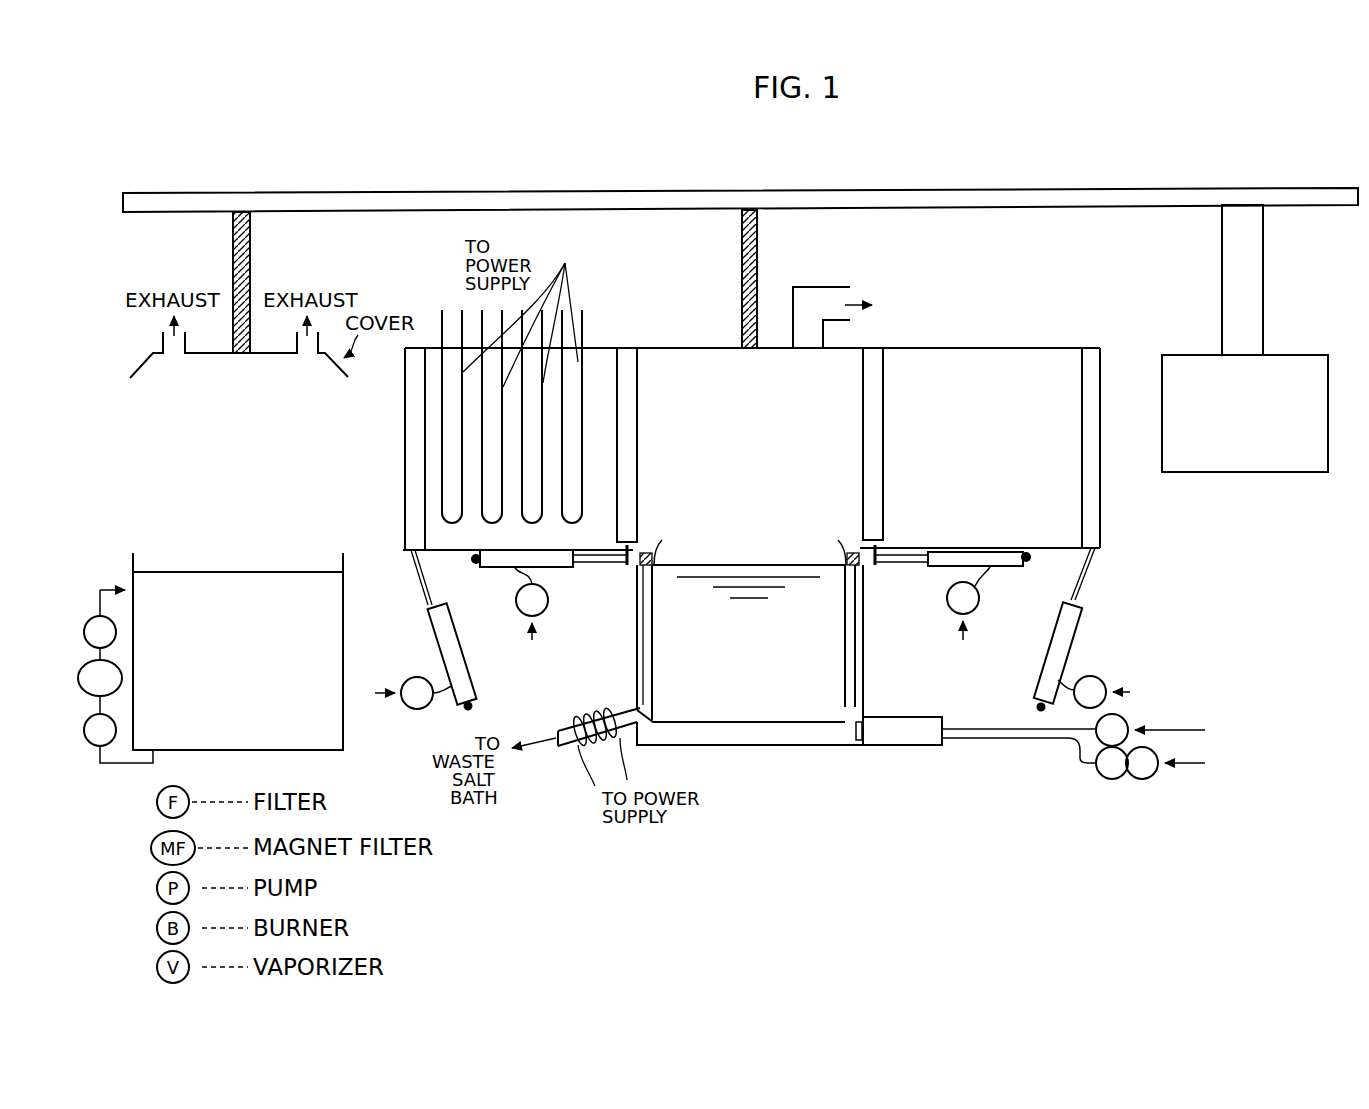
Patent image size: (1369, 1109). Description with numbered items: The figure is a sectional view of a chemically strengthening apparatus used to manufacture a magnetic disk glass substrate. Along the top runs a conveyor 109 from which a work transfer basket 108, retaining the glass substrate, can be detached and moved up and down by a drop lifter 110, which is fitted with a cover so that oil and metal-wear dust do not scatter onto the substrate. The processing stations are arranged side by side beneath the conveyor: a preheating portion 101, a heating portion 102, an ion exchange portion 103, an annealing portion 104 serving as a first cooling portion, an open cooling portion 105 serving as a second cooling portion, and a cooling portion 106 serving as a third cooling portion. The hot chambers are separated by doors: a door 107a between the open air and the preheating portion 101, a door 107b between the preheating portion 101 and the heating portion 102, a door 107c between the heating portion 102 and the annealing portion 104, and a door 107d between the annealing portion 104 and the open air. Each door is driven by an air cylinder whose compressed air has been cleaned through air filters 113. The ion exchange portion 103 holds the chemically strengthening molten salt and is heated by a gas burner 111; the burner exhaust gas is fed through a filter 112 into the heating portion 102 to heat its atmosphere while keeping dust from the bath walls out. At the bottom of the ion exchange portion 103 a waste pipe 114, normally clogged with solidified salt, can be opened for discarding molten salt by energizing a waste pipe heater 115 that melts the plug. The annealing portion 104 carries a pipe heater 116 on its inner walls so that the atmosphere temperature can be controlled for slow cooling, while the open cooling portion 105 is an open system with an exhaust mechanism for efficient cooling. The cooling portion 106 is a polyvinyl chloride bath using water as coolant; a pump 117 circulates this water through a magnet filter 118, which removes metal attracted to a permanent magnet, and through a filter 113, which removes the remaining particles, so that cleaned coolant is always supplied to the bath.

The preheating portion 101 is at (968, 367).
The heating portion 102 is at (687, 367).
The ion exchange portion 103 is at (790, 712).
The annealing portion 104 is at (452, 360).
The open cooling portion 105 is at (280, 414).
The cooling portion 106 is at (246, 592).
The door 107a is at (1100, 366).
The door 107b is at (883, 456).
The door 107c is at (637, 455).
The door 107d is at (403, 418).
The work transfer basket 108 is at (1285, 360).
The conveyor 109 is at (1072, 187).
The drop lifter 110 is at (262, 242).
The gas burner 111 is at (922, 718).
The filter 112 is at (637, 565).
The air filter / filter 113 is at (91, 616).
The waste pipe 114 is at (567, 748).
The waste pipe heater 115 is at (578, 722).
The pipe heater 116 is at (525, 312).
The pump 117 is at (90, 747).
The magnet filter 118 is at (80, 671).